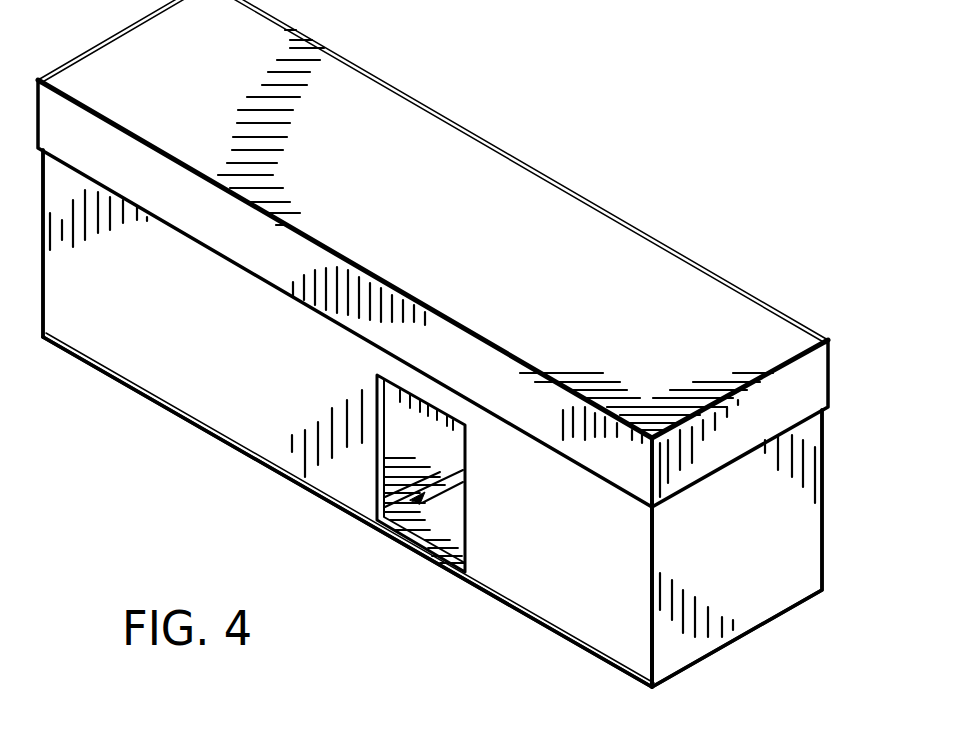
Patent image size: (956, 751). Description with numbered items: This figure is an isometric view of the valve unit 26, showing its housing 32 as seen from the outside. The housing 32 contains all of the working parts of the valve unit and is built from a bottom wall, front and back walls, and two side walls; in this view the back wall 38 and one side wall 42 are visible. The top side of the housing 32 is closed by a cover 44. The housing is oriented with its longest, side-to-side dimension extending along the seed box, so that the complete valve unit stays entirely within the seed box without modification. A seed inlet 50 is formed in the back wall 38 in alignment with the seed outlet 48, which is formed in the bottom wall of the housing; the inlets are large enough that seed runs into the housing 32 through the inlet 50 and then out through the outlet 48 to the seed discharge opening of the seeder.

The container 26 is at (305, 500).
The housing 32 is at (256, 412).
The back wall 38 is at (188, 383).
The side wall 42 is at (740, 598).
The cover 44 is at (505, 193).
The seed outlet opening 48 is at (452, 524).
The seed inlet 50 is at (417, 400).